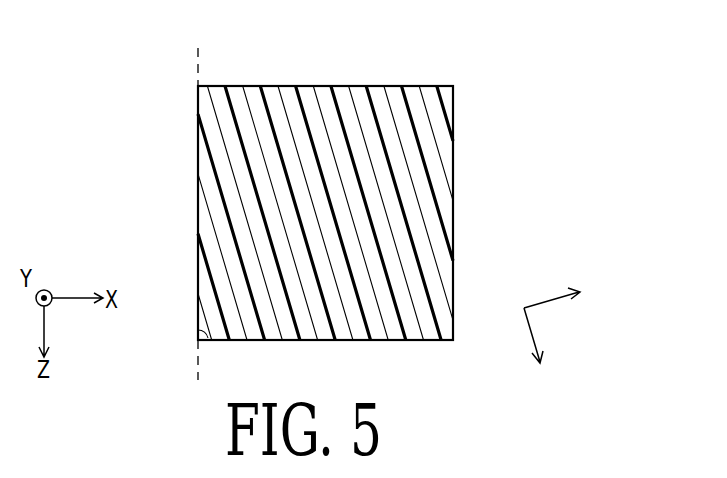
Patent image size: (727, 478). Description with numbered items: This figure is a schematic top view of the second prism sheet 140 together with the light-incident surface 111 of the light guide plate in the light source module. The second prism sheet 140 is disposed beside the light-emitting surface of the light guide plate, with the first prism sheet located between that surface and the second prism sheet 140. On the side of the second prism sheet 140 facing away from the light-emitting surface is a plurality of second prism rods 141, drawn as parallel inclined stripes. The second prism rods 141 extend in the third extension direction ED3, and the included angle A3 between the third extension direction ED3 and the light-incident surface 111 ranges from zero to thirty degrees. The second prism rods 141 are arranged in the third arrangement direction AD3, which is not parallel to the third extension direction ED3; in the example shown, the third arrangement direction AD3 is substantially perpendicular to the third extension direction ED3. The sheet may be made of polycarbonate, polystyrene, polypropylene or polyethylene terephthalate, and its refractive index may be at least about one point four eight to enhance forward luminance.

The light-incident surface 111 is at (198, 53).
The second prism sheet 140 is at (347, 86).
The second prism rods 141 is at (443, 158).
The included angle A3 is at (198, 337).
The third arrangement direction AD3 is at (573, 291).
The third extension direction ED3 is at (540, 352).